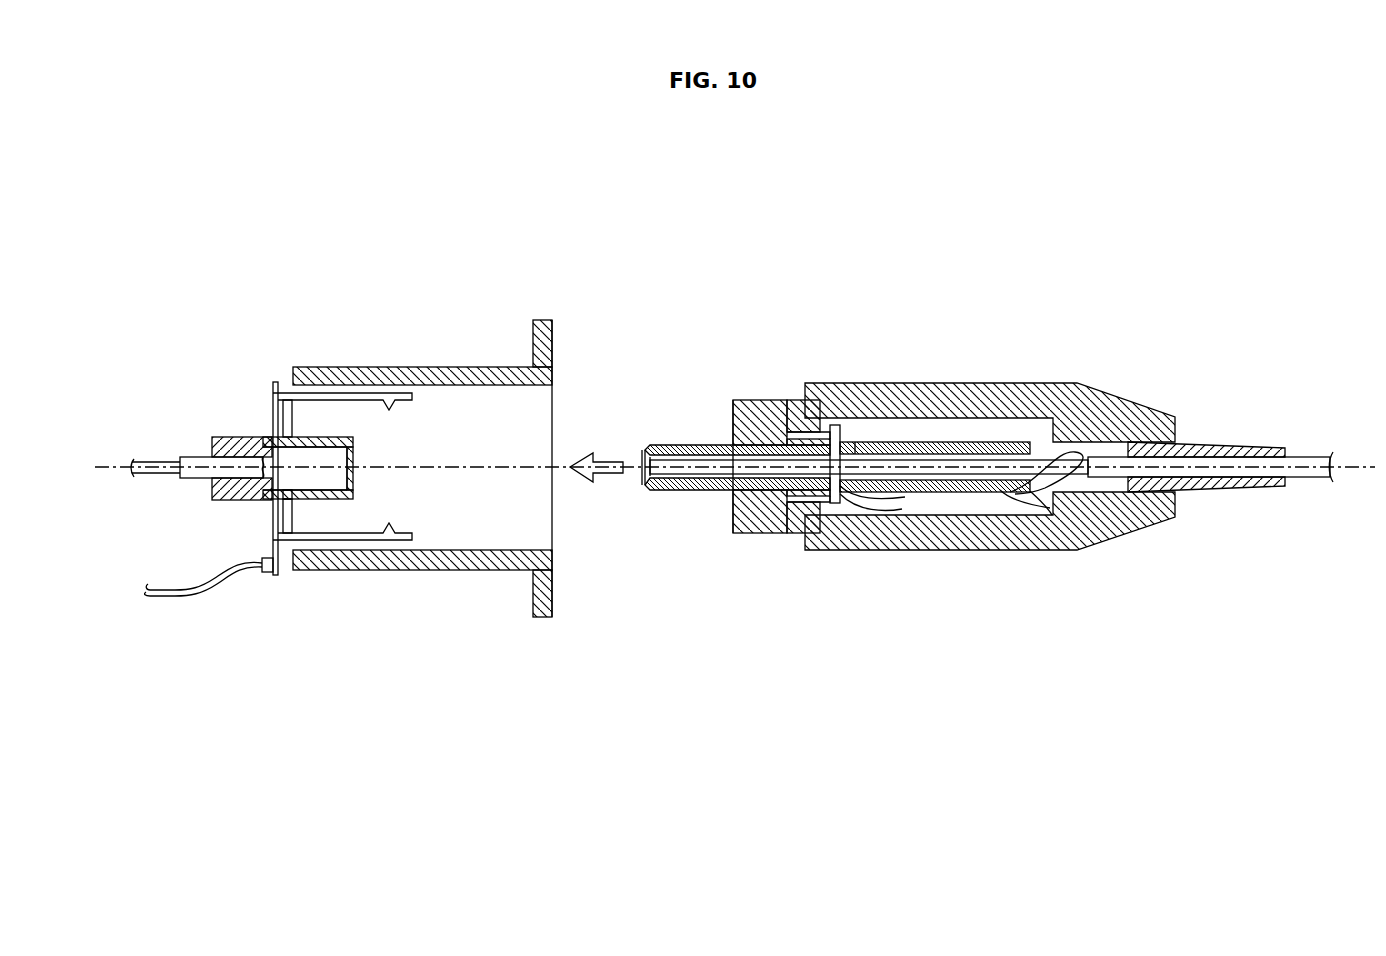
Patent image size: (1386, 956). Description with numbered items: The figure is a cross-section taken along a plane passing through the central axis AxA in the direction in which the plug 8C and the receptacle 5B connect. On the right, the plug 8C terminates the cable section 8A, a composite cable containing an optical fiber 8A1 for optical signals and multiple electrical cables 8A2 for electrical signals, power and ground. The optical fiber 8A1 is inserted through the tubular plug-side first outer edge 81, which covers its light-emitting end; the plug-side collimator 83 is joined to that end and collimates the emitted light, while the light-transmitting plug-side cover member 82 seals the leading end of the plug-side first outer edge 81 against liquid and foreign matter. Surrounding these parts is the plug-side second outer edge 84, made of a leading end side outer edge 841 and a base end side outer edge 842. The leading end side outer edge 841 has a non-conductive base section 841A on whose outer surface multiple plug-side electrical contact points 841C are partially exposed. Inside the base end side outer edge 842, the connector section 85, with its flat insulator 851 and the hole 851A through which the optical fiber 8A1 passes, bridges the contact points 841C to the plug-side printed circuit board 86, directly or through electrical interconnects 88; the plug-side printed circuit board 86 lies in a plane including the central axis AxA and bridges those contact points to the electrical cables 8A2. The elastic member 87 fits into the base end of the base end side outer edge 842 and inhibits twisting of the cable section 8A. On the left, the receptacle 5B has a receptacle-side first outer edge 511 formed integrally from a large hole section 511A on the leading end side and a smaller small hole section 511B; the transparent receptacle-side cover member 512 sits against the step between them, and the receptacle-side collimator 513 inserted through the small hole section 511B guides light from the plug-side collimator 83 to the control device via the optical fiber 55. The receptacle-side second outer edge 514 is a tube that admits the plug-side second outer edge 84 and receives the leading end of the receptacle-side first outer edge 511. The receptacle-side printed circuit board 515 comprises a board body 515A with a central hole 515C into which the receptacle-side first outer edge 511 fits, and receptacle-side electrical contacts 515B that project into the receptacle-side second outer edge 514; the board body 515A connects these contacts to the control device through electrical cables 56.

The receptacle 5B is at (391, 276).
The plug 8C is at (1031, 276).
The optical fiber 55 is at (180, 463).
The electrical cables 56 is at (186, 596).
The receptacle-side first outer edge 511 is at (193, 334).
The large hole section 511A is at (281, 400).
The small hole section 511B is at (232, 437).
The receptacle-side cover member 512 is at (271, 503).
The receptacle-side collimator 513 is at (192, 462).
The receptacle-side second outer edge 514 is at (466, 378).
The receptacle-side printed circuit board 515 is at (388, 645).
The board body 515A is at (278, 560).
The receptacle-side electrical contacts 515B is at (376, 394).
The hole 515C is at (296, 500).
The plug-side first outer edge 81 is at (680, 446).
The plug-side cover member 82 is at (648, 484).
The plug-side collimator 83 is at (672, 476).
The plug-side second outer edge 84 is at (870, 632).
The leading end side outer edge 841 is at (755, 536).
The base section 841A is at (748, 400).
The plug-side electrical contact points 841C is at (772, 400).
The base end side outer edge 842 is at (852, 552).
The connector section 85 is at (848, 444).
The insulator 851 is at (865, 493).
The hole 851A is at (842, 458).
The plug-side printed circuit board 86 is at (960, 508).
The elastic member 87 is at (1192, 488).
The electrical interconnects 88 is at (885, 500).
The cable section 8A is at (1306, 460).
The optical fiber 8A1 is at (935, 455).
The electrical cables 8A2 is at (1036, 500).
The central axis AxA is at (1355, 463).